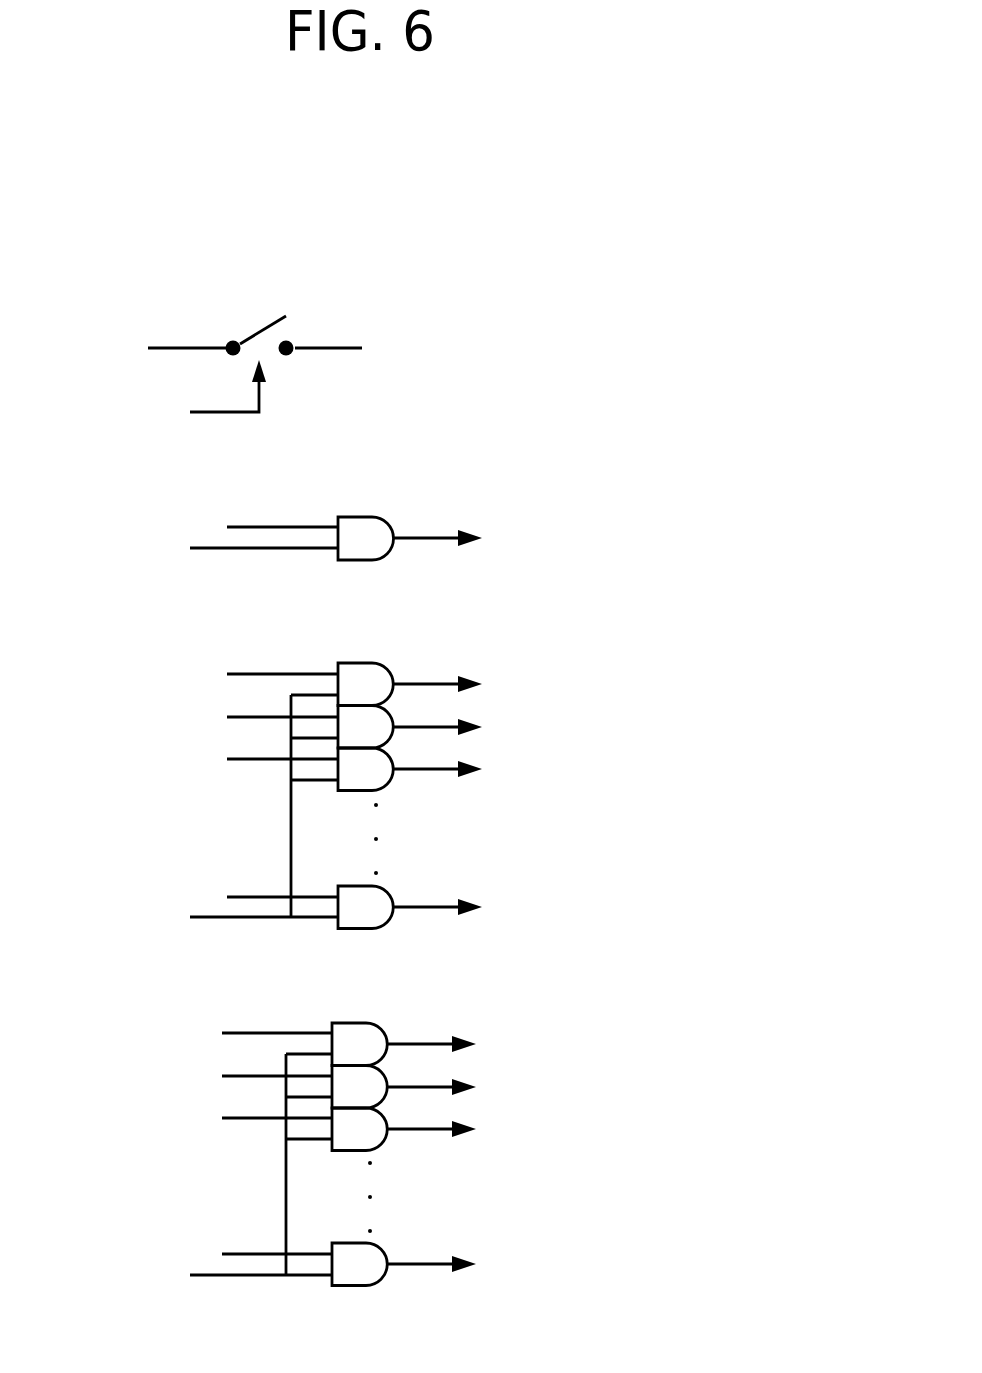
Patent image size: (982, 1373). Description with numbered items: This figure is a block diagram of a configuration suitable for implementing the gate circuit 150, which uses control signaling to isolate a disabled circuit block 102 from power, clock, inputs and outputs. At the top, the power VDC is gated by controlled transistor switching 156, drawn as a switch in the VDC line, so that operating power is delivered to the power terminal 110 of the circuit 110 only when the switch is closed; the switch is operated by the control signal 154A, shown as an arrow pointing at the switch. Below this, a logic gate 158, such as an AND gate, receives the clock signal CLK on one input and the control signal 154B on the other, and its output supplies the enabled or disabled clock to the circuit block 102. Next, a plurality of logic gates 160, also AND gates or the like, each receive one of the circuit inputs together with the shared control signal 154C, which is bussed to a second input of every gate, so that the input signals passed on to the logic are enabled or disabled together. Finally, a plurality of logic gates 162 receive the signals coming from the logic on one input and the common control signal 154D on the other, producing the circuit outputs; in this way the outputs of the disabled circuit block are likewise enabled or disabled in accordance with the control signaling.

The gate circuit 150 is at (428, 152).
The controlled transistor switching 156 is at (274, 308).
The power terminal 110 is at (491, 372).
The control signal 154A is at (184, 395).
The control signal 154B is at (220, 546).
The logic gate 158 is at (377, 511).
The circuit block 102 is at (606, 536).
The logic gates 160 is at (428, 832).
The control signal 154C is at (220, 918).
The logic gates 162 is at (421, 1192).
The control signal 154D is at (217, 1271).